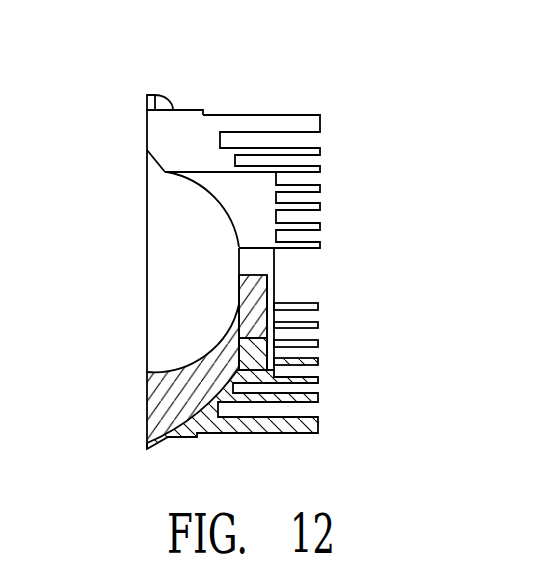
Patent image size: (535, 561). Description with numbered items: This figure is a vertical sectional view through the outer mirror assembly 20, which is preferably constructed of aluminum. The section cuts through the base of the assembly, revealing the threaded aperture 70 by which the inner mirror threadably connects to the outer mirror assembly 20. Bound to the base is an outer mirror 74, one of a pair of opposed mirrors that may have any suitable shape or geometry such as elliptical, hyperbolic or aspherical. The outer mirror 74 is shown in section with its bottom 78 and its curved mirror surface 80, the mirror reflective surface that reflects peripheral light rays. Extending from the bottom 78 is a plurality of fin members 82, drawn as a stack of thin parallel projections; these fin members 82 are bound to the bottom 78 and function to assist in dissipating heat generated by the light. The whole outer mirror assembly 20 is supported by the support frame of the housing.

The outer mirror assembly 20 is at (110, 192).
The threaded aperture 70 is at (240, 292).
The outer mirror 74 is at (135, 355).
The bottom 78 is at (166, 442).
The mirror surface 80 is at (165, 388).
The fin members 82 is at (314, 125).